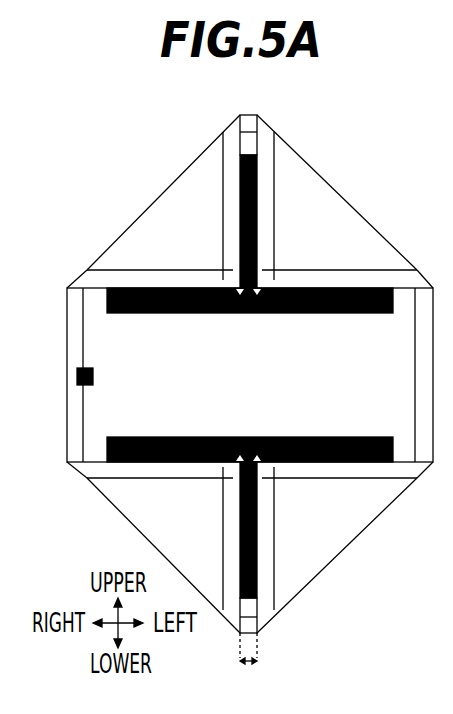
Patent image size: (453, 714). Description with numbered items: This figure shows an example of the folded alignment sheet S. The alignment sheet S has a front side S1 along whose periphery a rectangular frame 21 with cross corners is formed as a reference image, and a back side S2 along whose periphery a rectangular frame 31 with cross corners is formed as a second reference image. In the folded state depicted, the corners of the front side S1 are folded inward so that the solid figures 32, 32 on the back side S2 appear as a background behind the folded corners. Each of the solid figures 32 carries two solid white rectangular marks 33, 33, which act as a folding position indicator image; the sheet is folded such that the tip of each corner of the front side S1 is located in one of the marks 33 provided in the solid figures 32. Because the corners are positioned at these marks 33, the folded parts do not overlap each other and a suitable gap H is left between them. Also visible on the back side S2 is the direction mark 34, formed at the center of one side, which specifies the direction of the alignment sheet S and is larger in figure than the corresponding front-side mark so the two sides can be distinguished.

The alignment sheet S is at (131, 128).
The front side S1 is at (148, 237).
The back side S2 is at (100, 338).
The rectangular frame 21 is at (223, 162).
The rectangular frame 31 is at (82, 428).
The solid figure 32 is at (370, 315).
The mark 33 is at (240, 292).
The direction mark 34 is at (75, 377).
The gap H is at (250, 667).